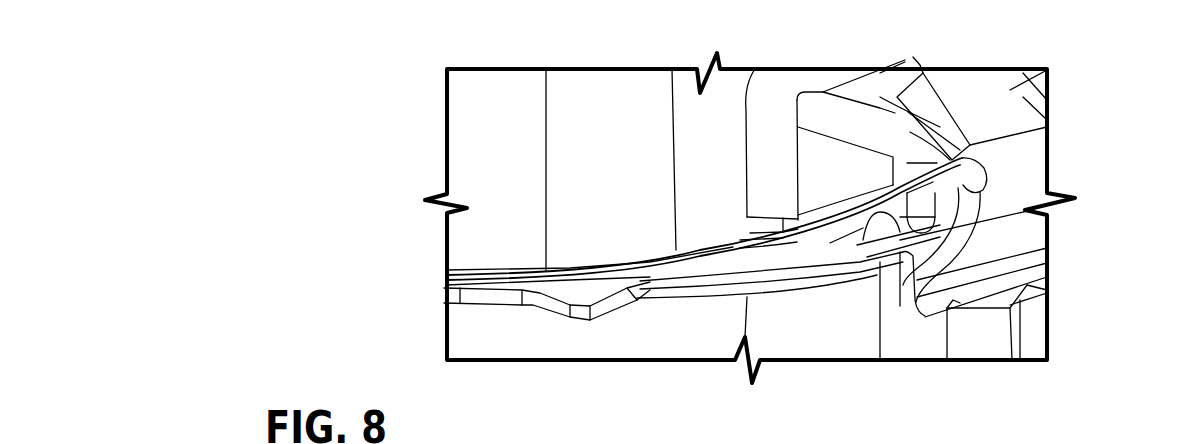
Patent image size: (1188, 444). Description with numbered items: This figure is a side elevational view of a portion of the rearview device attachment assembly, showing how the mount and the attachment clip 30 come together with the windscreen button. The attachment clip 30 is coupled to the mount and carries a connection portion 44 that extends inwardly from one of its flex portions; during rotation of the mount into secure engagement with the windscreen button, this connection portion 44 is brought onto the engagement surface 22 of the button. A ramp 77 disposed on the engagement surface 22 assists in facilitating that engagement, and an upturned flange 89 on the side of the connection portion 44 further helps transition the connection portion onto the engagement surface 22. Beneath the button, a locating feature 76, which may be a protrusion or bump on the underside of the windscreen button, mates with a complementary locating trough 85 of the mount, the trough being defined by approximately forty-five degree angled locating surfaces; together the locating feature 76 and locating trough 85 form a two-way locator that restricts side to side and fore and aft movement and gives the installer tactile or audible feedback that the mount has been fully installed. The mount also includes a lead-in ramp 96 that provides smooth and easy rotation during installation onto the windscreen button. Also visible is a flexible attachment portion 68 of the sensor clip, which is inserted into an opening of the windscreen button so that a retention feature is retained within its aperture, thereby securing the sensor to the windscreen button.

The engagement surface 22 is at (912, 116).
The attachment clip 30 is at (1013, 226).
The connection portion 44 is at (1003, 106).
The flexible attachment portion 68 is at (802, 248).
The locating feature 76 is at (544, 287).
The ramp 77 is at (829, 162).
The locating trough 85 is at (634, 386).
The upturned flange 89 is at (933, 117).
The lead-in ramp 96 is at (452, 286).